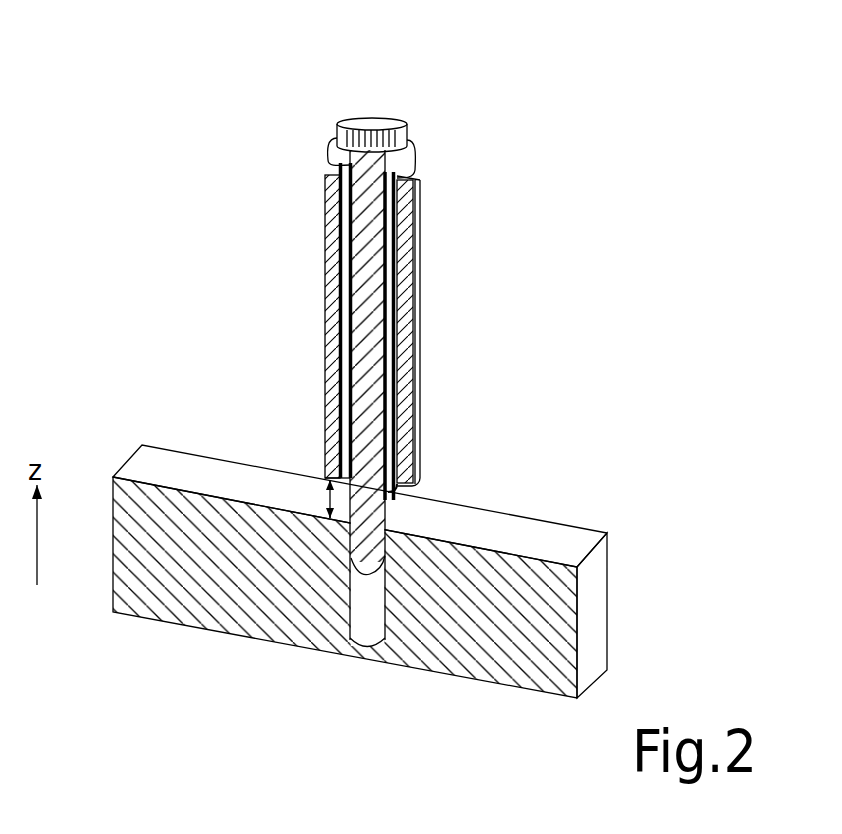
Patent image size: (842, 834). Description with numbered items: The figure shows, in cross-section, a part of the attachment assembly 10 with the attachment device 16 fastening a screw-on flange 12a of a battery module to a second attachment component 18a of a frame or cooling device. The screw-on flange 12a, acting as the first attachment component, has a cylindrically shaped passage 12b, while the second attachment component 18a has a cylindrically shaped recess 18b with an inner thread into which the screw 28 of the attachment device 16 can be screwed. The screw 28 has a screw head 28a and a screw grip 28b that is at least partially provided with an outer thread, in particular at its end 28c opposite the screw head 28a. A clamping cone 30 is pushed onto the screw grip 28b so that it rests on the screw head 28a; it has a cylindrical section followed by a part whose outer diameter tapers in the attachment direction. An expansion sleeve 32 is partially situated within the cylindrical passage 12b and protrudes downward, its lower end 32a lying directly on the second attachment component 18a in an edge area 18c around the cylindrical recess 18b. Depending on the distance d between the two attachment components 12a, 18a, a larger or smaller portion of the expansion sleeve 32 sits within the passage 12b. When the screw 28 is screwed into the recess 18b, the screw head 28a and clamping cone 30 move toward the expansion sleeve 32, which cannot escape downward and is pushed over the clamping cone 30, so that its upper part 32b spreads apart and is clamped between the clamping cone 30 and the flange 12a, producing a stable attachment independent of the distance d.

The attachment assembly 10 is at (351, 373).
The attachment device 16 is at (367, 354).
The screw 28 is at (383, 363).
The screw head 28a is at (407, 137).
The screw grip 28b is at (363, 320).
The end of the screw 28c is at (357, 557).
The clamping cone 30 is at (327, 184).
The screw-on flange 12a is at (330, 353).
The cylindrical passage 12b is at (403, 253).
The expansion sleeve 32 is at (375, 331).
The lower end of the expansion sleeve 32a is at (397, 489).
The upper part of the expansion sleeve 32b is at (343, 261).
The second attachment component 18a is at (173, 467).
The cylindrical recess 18b is at (373, 620).
The edge area 18c is at (350, 512).
The distance d is at (326, 492).